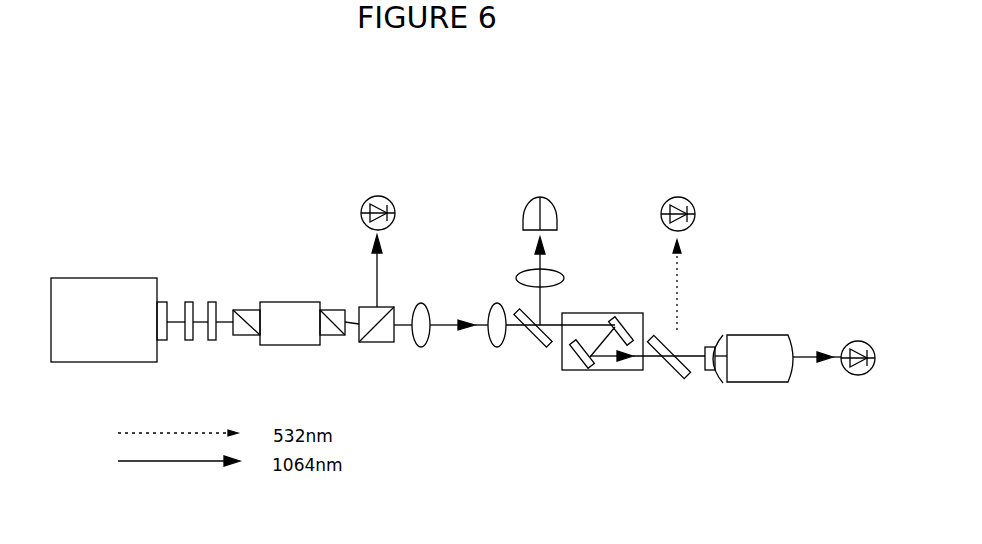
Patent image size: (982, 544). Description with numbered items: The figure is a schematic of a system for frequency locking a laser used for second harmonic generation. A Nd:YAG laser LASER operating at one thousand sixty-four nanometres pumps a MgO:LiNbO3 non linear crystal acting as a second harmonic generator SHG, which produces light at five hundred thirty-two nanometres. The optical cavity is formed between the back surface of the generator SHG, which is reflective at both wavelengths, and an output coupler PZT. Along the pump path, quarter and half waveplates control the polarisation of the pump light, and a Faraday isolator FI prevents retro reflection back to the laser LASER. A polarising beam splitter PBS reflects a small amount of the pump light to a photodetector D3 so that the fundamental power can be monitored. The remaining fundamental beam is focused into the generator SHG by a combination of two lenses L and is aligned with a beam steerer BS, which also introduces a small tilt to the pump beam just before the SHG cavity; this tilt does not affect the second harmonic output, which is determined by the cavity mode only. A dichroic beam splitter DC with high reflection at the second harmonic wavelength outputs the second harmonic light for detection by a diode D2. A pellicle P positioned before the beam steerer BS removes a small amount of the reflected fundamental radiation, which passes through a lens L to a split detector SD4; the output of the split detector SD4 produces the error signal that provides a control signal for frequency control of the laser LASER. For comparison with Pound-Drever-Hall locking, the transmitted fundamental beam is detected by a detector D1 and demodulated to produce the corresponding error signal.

The laser LASER is at (109, 320).
The Faraday isolator FI is at (289, 309).
The polarising beam splitter PBS is at (374, 343).
The lens L is at (498, 324).
The pellicle P is at (533, 344).
The split detector SD4 is at (568, 215).
The photodetector D3 is at (397, 214).
The diode D2 is at (697, 215).
The photodetector D1 is at (858, 344).
The beam steerer BS is at (602, 363).
The dichroic beam splitter DC is at (668, 374).
The output coupler PZT is at (709, 337).
The second harmonic generator SHG is at (753, 374).